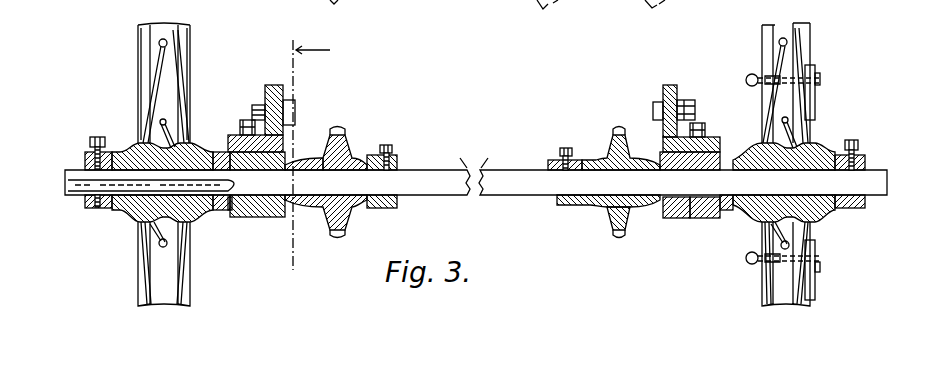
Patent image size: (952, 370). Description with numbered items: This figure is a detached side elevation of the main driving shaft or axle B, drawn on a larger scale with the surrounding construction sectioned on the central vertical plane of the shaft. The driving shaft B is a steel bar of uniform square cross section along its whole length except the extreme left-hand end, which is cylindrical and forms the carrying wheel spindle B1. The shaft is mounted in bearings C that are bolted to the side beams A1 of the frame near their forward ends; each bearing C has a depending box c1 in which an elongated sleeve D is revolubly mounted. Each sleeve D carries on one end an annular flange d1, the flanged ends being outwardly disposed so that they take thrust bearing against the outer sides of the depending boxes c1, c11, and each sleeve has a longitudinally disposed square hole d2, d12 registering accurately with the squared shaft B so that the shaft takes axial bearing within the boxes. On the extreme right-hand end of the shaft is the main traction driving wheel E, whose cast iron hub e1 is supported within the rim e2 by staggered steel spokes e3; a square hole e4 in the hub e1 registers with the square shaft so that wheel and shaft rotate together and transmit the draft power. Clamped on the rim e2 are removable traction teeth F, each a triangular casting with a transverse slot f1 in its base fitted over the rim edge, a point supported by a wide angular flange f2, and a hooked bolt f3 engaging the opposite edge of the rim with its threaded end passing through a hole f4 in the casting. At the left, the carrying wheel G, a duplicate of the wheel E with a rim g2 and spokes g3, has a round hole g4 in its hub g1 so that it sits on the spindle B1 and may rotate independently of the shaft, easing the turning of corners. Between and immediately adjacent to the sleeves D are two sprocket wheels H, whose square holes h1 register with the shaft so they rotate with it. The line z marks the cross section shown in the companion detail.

The main traction-wheel axle or driving shaft B is at (905, 181).
The carrying wheel spindle B1 is at (88, 189).
The carrying wheel G is at (110, 83).
The hub g1 is at (125, 150).
The rim g2 is at (137, 45).
The spokes g3 is at (165, 67).
The round hole g4 is at (133, 218).
The hooked bolt f3 is at (746, 80).
The hole f4 is at (390, 207).
The annular flange d1 is at (222, 150).
The collar d'2 d12 is at (222, 212).
The square hole d2 is at (696, 220).
The depending box c1 is at (263, 219).
The bearing block c'' c11 is at (673, 219).
The bearing C is at (291, 138).
The elongated sleeve D is at (296, 150).
The side beam A1 is at (271, 87).
The section line z- z is at (305, 152).
The sprocket wheel H is at (350, 141).
The square hole h1 is at (364, 210).
The main traction driving wheel E is at (757, 119).
The hub e1 is at (822, 146).
The rim e2 is at (760, 40).
The spokes e3 is at (796, 50).
The square hole e4 is at (822, 218).
The traction tooth F is at (815, 99).
The transverse slot f1 is at (815, 64).
The angular flange f2 is at (865, 161).